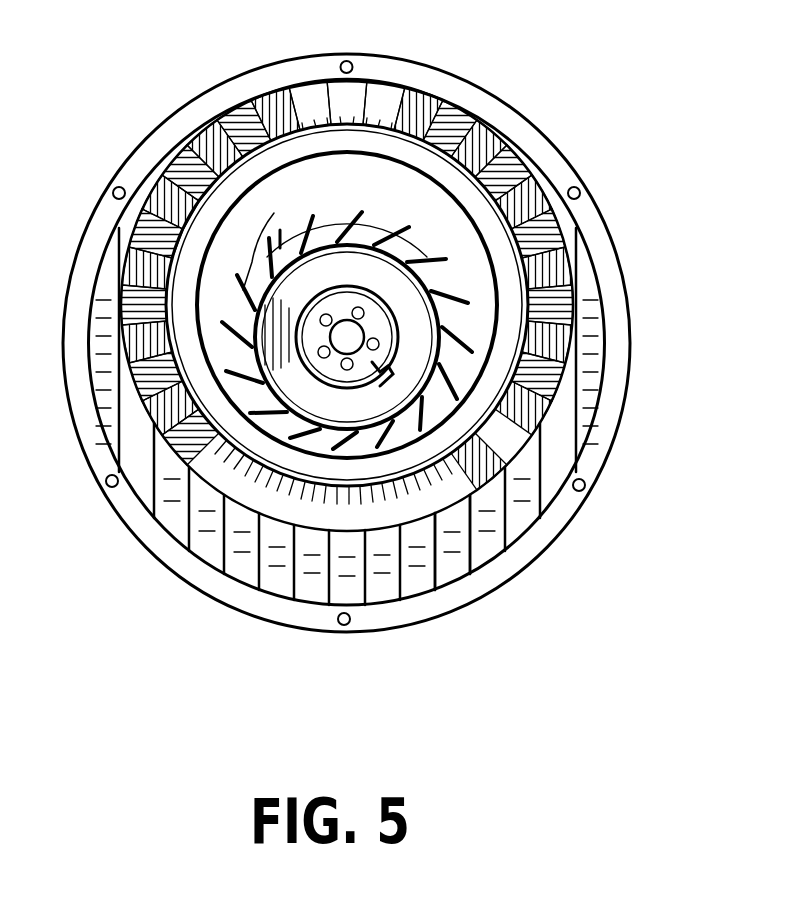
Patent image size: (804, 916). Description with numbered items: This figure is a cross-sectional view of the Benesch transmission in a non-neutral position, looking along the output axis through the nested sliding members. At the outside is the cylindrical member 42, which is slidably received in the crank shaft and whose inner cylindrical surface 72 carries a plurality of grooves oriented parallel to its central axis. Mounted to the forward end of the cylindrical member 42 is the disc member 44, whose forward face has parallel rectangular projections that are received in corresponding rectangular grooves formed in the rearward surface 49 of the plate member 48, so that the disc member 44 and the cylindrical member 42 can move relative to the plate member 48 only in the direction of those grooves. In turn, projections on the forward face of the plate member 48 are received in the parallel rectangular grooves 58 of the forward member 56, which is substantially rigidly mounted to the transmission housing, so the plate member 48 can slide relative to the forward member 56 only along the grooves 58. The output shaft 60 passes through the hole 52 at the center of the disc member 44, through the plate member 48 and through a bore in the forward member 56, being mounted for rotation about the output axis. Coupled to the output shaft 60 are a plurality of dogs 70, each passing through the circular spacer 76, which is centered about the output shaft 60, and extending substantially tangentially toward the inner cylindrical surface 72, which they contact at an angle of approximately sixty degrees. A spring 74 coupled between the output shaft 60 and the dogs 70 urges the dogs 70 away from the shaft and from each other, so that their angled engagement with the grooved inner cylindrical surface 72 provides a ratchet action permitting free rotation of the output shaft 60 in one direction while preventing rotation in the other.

The cylindrical member 42 is at (414, 138).
The disc member 44 is at (207, 297).
The plate member 48 is at (312, 97).
The rearward surface 49 is at (197, 127).
The hole 52 is at (368, 226).
The forward member 56 is at (452, 568).
The grooves 58 is at (165, 512).
The output shaft 60 is at (347, 333).
The dogs 70 is at (310, 222).
The inner cylindrical surface 72 is at (366, 158).
The spring 74 is at (389, 323).
The circular spacer 76 is at (418, 282).